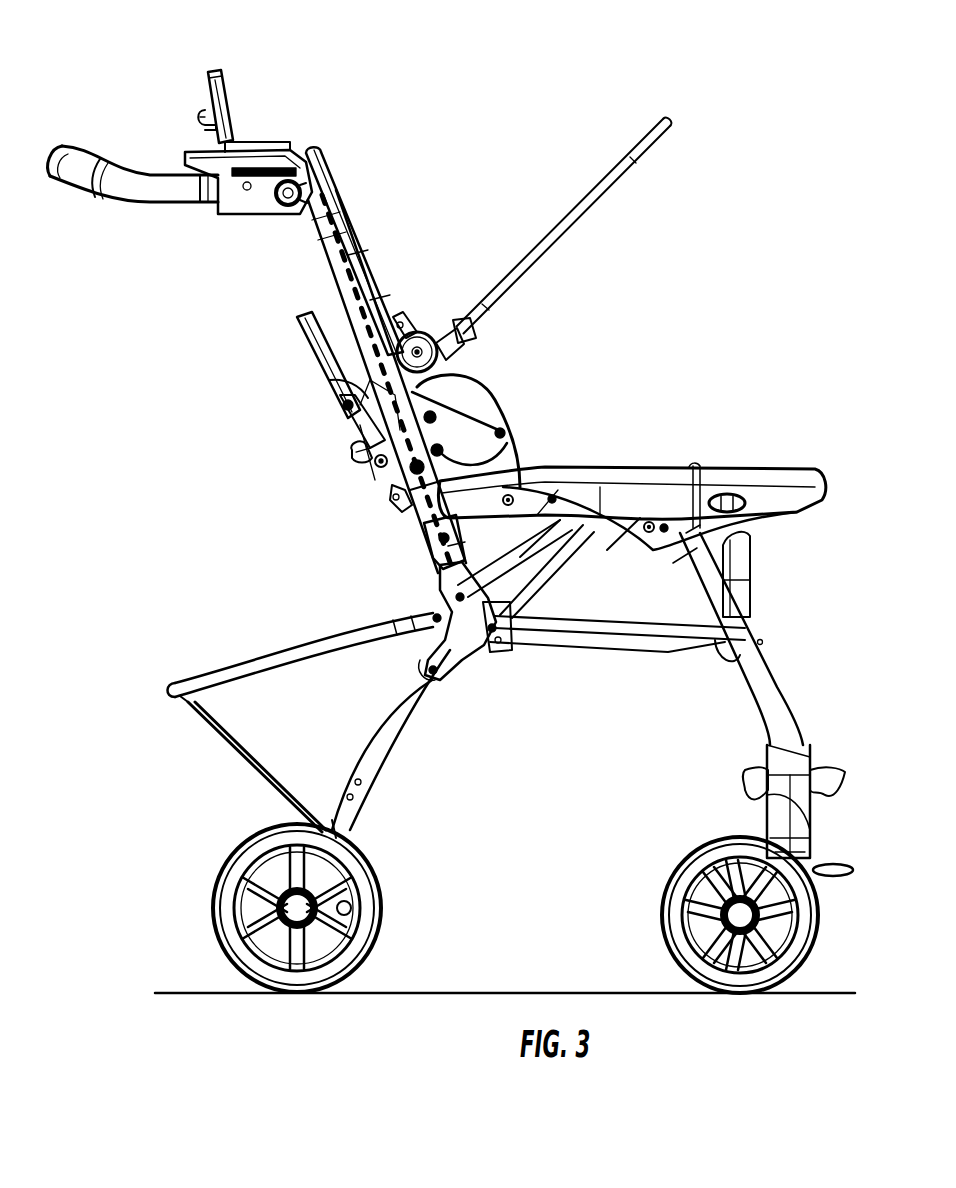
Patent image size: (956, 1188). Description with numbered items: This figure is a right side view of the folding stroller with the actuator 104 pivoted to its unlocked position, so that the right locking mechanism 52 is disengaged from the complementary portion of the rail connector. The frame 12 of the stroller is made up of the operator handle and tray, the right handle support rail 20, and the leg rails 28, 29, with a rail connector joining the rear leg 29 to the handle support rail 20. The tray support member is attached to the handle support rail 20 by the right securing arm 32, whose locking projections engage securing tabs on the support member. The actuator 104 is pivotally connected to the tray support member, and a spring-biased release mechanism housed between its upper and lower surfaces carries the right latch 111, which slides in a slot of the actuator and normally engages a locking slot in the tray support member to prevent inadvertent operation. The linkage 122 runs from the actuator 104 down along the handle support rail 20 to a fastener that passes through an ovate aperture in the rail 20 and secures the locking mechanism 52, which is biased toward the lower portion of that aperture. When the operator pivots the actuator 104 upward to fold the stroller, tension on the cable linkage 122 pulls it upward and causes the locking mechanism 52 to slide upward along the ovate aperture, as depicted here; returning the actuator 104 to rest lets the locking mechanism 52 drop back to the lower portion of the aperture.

The frame 12 is at (185, 152).
The right handle support rail 20 is at (323, 256).
The leg rail 28 is at (765, 680).
The rear leg rail 29 is at (395, 735).
The right securing arm 32 is at (311, 190).
The right locking mechanism 52 is at (430, 545).
The actuator 104 is at (213, 78).
The right latch 111 is at (205, 112).
The linkage 122 is at (348, 270).